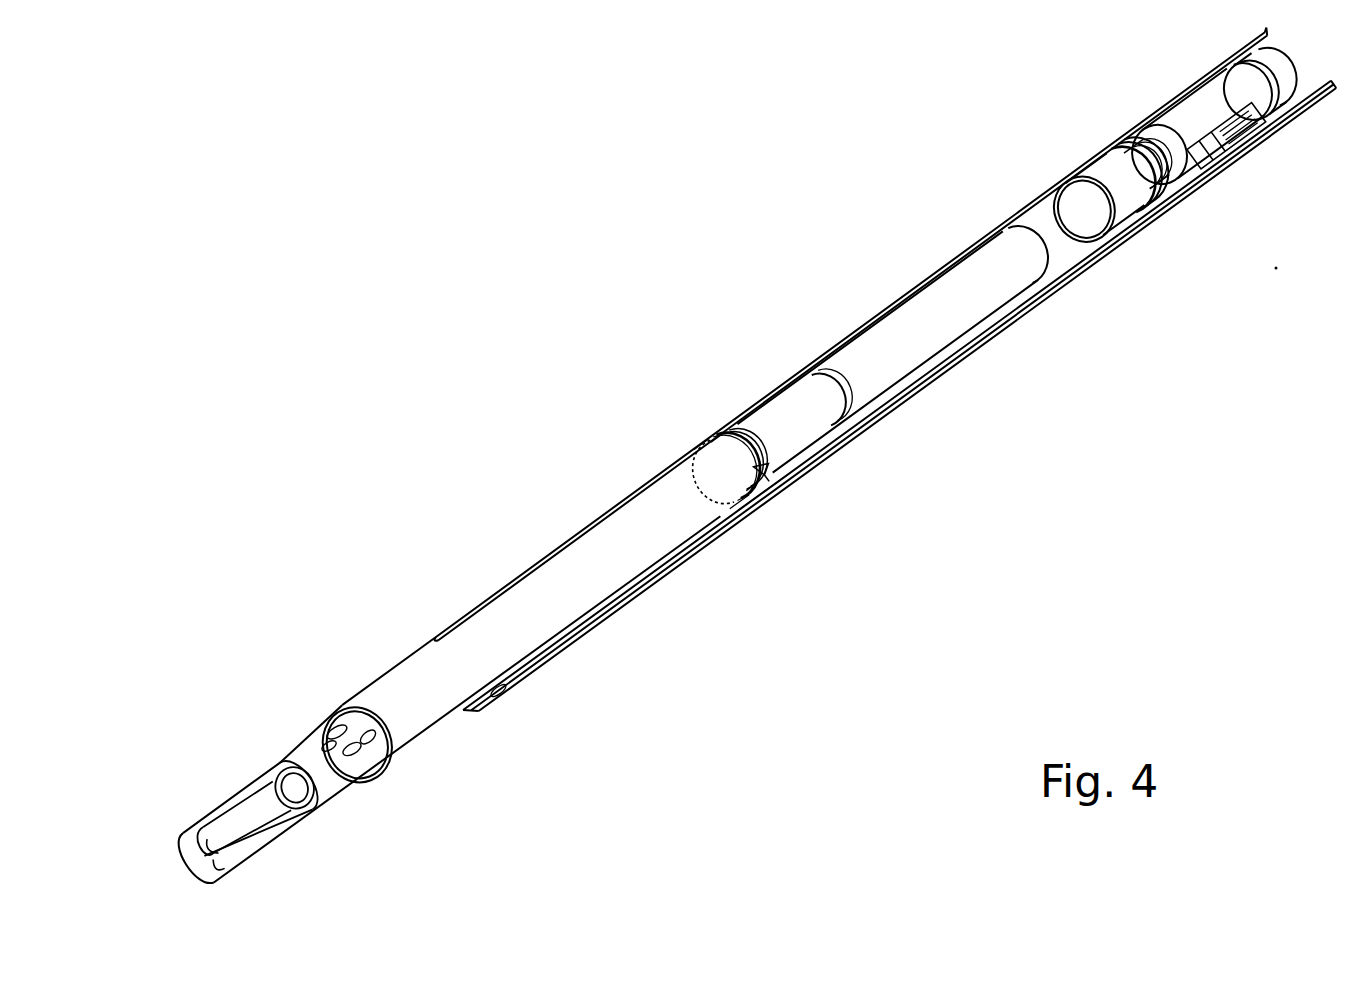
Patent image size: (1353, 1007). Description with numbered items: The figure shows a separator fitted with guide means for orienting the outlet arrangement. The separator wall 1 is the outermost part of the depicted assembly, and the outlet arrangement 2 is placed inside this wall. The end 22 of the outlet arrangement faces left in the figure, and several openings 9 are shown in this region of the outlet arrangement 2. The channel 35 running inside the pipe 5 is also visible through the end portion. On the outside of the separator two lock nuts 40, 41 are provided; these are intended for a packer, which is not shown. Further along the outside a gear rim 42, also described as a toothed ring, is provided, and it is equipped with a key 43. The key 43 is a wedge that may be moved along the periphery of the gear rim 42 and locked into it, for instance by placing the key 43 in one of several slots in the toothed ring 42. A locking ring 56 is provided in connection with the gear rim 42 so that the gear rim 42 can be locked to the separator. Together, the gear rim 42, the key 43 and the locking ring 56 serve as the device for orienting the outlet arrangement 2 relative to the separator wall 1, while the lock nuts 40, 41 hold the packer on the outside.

The separator wall 1 is at (593, 518).
The outlet arrangement 2 is at (447, 660).
The pipe 5 is at (228, 838).
The openings 9 is at (362, 756).
The end of the outlet arrangement 22 is at (228, 860).
The channel 35 is at (263, 812).
The lock nut 40 is at (840, 397).
The lock nut 41 is at (772, 473).
The gear rim 42 is at (747, 510).
The key 43 is at (693, 453).
The locking ring 56 is at (710, 442).